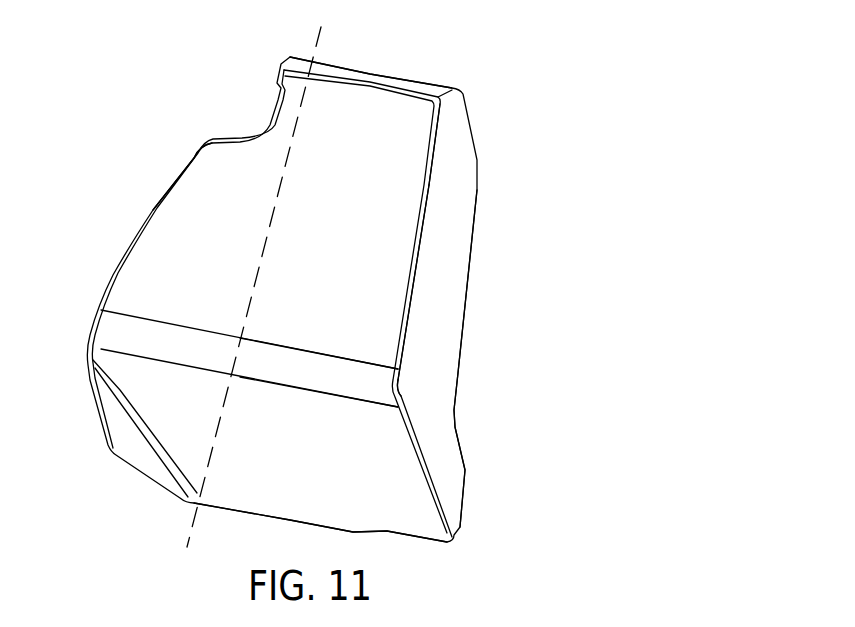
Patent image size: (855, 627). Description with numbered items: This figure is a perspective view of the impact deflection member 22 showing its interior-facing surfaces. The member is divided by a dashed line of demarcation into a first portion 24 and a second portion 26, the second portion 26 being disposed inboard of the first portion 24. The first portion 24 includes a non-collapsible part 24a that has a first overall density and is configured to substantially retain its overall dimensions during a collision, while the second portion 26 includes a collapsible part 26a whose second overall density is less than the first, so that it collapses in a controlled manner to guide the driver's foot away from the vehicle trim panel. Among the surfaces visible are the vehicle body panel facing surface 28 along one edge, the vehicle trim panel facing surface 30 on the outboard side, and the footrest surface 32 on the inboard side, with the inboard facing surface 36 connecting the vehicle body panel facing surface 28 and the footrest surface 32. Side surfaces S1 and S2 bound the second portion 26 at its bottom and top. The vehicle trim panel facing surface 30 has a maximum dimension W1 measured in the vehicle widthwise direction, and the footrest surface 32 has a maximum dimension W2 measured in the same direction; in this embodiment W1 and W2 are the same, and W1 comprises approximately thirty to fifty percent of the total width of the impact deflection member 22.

The impact deflection member 22 is at (372, 36).
The first portion 24 is at (184, 241).
The non-collapsible part 24a is at (148, 278).
The second portion 26 is at (382, 233).
The collapsible part 26a is at (382, 294).
The vehicle body panel facing surface 28 is at (461, 372).
The vehicle trim panel facing surface 30 is at (214, 211).
The footrest surface 32 is at (355, 197).
The inboard facing surface 36 is at (444, 332).
The side surface S1 is at (297, 489).
The side surface S2 is at (402, 83).
The maximum dimension of the vehicle trim panel facing surface W1 is at (238, 355).
The maximum dimension of the footrest surface W2 is at (388, 383).